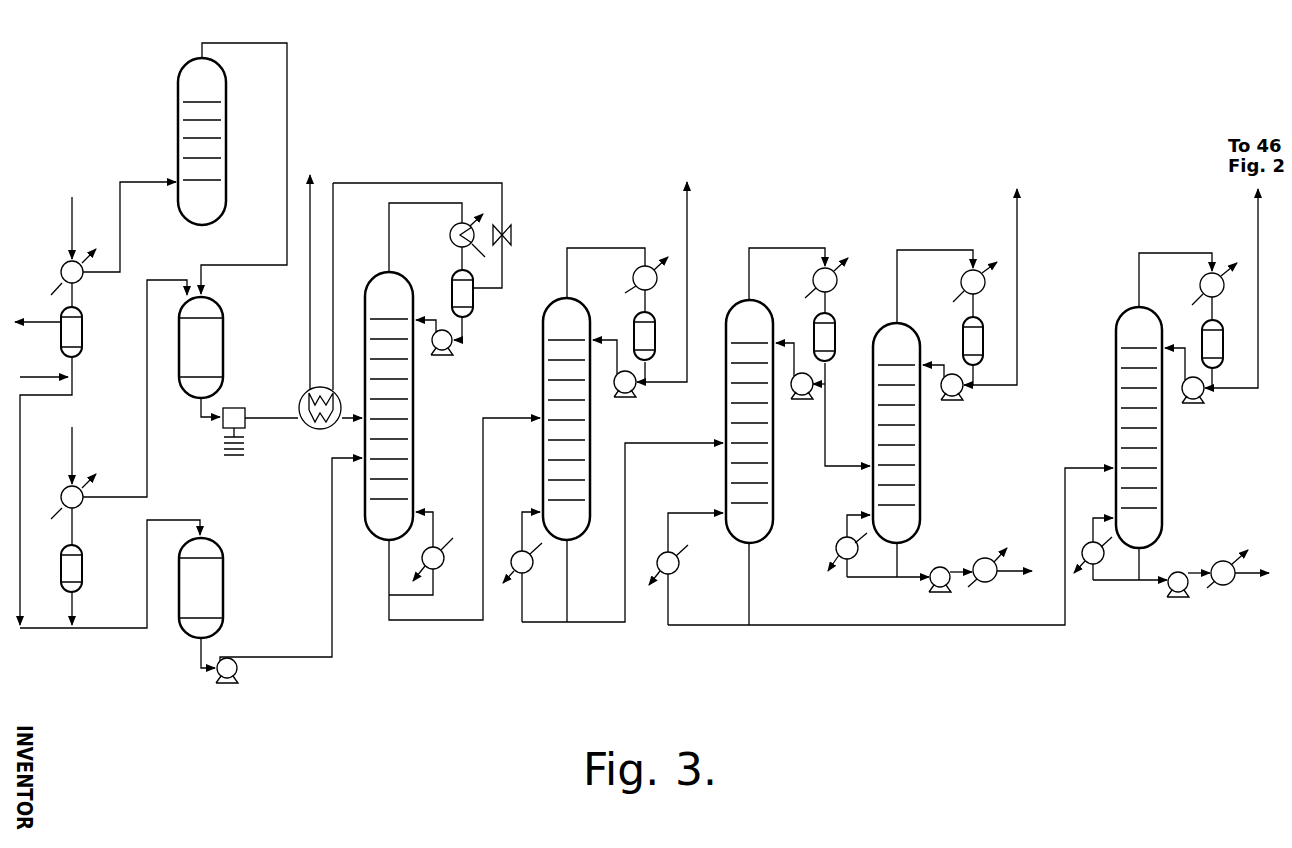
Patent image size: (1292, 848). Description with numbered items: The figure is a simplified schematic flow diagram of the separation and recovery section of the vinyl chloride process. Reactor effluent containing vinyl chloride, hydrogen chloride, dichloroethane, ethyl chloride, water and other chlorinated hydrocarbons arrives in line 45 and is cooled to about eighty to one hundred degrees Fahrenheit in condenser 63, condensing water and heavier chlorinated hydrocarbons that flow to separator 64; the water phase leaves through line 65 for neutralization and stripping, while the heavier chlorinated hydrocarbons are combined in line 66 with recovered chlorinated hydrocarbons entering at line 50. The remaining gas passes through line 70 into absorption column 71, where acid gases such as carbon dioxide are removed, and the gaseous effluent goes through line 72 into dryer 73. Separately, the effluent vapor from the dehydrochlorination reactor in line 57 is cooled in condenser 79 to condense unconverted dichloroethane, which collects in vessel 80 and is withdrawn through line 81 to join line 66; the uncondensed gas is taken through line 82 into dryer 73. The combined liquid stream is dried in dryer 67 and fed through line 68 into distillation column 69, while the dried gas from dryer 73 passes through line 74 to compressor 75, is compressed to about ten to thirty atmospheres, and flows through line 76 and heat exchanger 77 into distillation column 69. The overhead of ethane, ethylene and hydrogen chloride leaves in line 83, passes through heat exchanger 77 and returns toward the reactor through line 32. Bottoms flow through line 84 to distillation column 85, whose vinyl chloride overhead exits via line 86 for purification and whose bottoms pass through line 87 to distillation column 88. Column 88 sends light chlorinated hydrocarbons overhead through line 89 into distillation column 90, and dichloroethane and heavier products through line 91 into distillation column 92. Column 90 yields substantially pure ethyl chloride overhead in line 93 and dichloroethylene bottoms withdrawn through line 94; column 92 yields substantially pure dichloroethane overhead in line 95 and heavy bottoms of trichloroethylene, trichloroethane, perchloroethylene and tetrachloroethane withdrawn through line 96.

The line 32 is at (312, 197).
The line 45 is at (70, 211).
The feed line 50 is at (40, 374).
The line 57 is at (75, 453).
The condenser 63 is at (63, 265).
The separator 64 is at (82, 340).
The line 65 is at (43, 320).
The line 66 is at (75, 387).
The dryer 67 is at (223, 603).
The line 68 is at (258, 660).
The distillation column 69 is at (412, 443).
The line 70 is at (120, 229).
The absorption column 71 is at (178, 133).
The line 72 is at (287, 137).
The dryer 73 is at (223, 355).
The line 74 is at (202, 422).
The compressor 75 is at (233, 462).
The line 76 is at (267, 420).
The heat exchanger 77 is at (312, 428).
The condenser 79 is at (62, 490).
The vessel 80 is at (83, 582).
The line 81 is at (73, 603).
The line 82 is at (147, 395).
The line 83 is at (502, 203).
The line 84 is at (417, 622).
The distillation column 85 is at (543, 387).
The line 86 is at (687, 223).
The line 87 is at (581, 623).
The distillation column 88 is at (726, 427).
The line 89 is at (787, 248).
The distillation column 90 is at (920, 453).
The line 91 is at (875, 627).
The distillation column 92 is at (1116, 403).
The line 93 is at (1017, 240).
The line 94 is at (1008, 575).
The line 95 is at (1258, 248).
The line 96 is at (1245, 575).